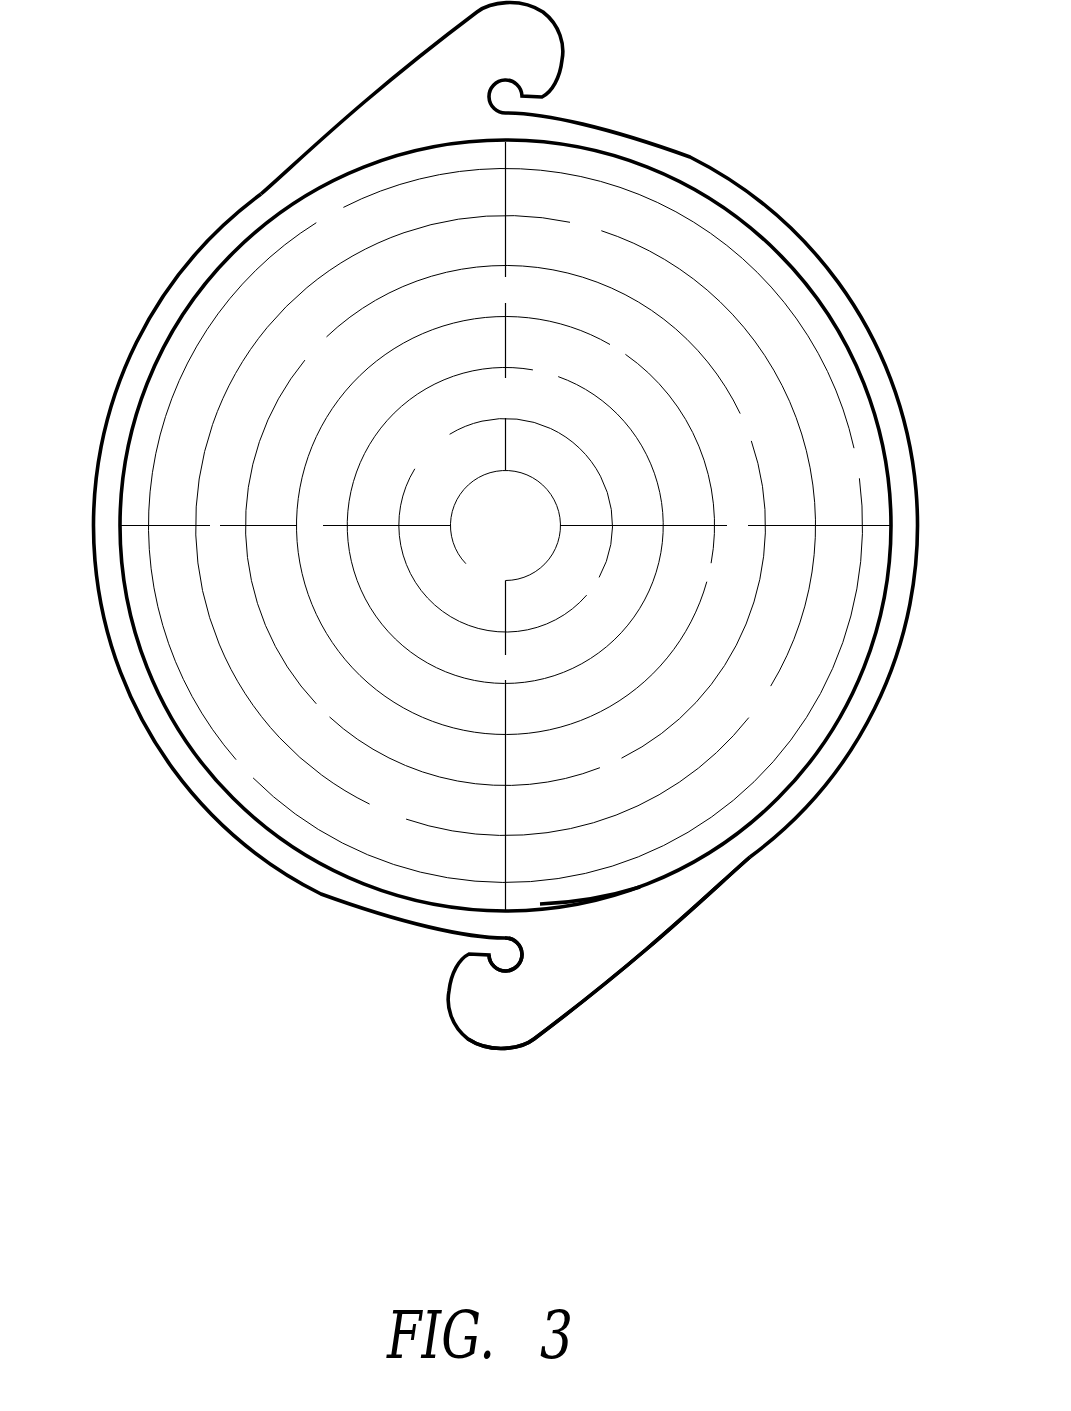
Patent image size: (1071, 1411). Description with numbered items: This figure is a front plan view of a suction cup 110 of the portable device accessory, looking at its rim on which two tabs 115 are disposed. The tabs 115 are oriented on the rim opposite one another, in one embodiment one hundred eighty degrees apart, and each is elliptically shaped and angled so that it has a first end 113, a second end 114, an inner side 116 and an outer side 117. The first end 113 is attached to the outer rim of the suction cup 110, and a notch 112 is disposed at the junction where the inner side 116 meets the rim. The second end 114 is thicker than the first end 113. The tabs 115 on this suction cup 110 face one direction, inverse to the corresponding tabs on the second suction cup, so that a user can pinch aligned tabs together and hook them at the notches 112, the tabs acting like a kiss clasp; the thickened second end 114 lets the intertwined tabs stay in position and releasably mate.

The suction cup 110 is at (722, 318).
The notch 112 is at (522, 953).
The first end 113 is at (587, 932).
The second end 114 is at (510, 1028).
The tab 115 is at (562, 50).
The inner side 116 is at (453, 988).
The outer side 117 is at (580, 1005).